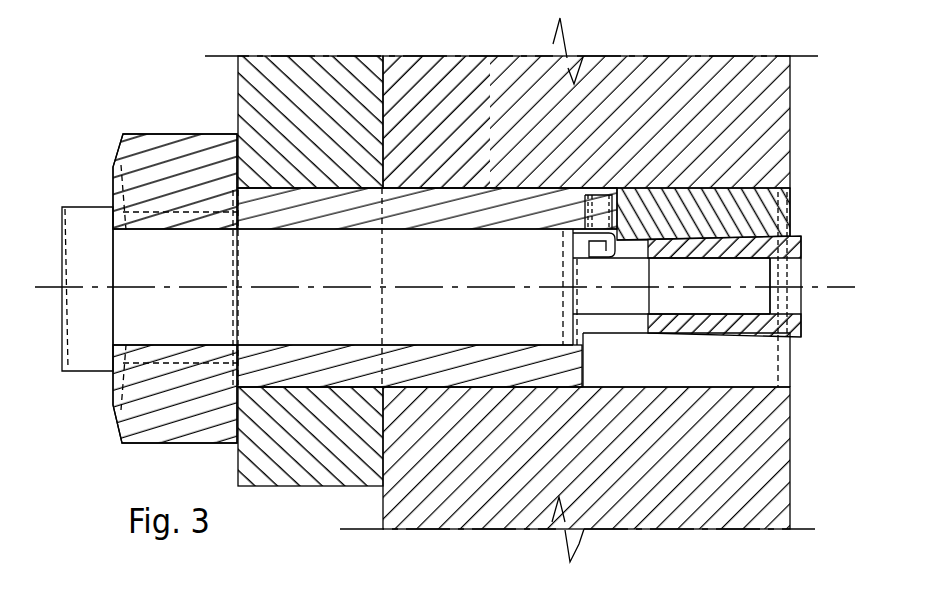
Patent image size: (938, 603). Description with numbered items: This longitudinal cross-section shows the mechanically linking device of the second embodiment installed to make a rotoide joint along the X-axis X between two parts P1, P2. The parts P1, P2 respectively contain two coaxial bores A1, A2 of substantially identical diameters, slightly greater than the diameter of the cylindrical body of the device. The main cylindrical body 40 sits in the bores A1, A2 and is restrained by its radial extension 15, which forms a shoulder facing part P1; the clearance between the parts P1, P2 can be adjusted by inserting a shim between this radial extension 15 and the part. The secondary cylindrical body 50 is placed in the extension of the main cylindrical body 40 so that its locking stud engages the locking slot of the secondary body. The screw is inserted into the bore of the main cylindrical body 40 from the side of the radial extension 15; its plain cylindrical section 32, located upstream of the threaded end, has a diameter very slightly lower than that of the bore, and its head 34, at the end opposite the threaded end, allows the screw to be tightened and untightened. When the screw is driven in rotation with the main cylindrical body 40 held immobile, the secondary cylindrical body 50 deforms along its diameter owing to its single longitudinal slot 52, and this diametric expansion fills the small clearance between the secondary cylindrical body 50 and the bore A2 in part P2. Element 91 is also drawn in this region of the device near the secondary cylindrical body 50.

The X-axis X is at (439, 278).
The first part P1 is at (312, 62).
The second part P2 is at (721, 62).
The first coaxial bore A1 is at (336, 190).
The second coaxial bore A2 is at (445, 190).
The radial extension 15 is at (167, 398).
The head 34 is at (88, 352).
The main cylindrical body 40 is at (290, 368).
The plain cylindrical section 32 is at (513, 333).
The secondary cylindrical body 50 is at (778, 221).
The nut bore 91 is at (697, 302).
The longitudinal slot 52 is at (762, 358).